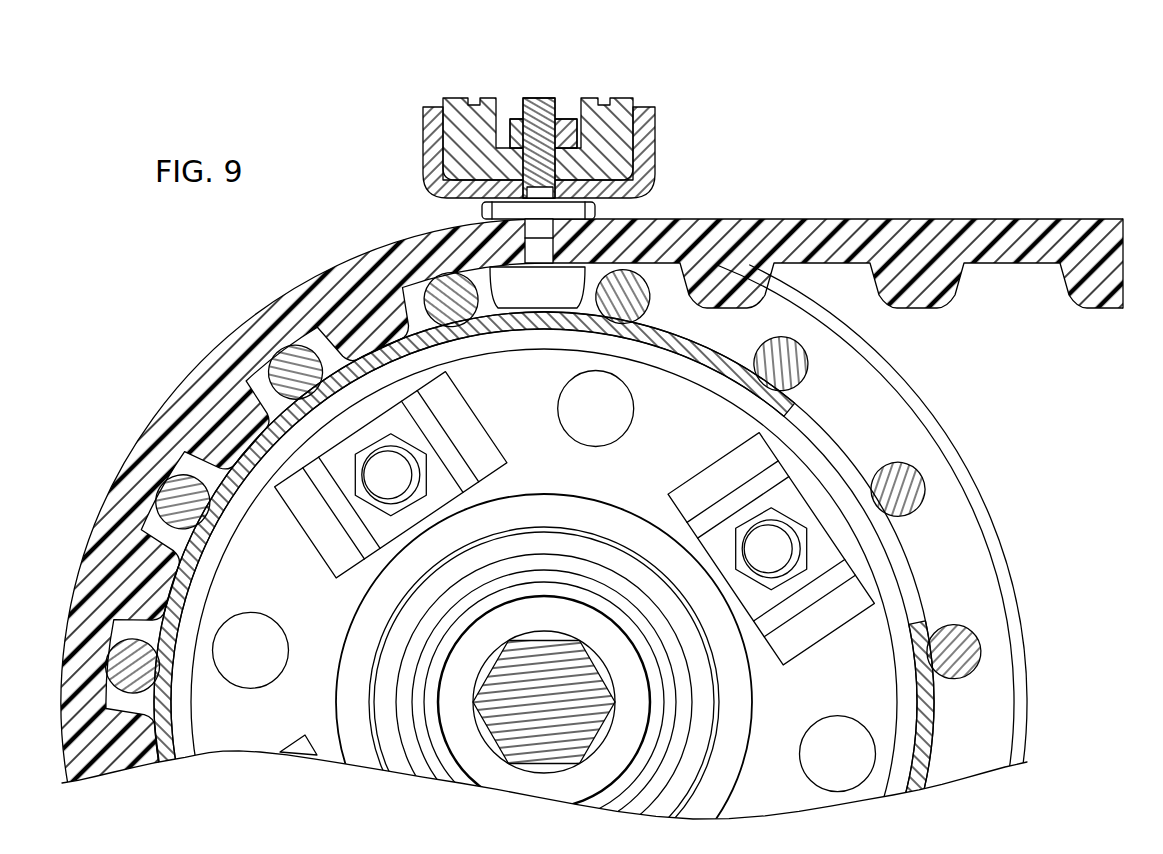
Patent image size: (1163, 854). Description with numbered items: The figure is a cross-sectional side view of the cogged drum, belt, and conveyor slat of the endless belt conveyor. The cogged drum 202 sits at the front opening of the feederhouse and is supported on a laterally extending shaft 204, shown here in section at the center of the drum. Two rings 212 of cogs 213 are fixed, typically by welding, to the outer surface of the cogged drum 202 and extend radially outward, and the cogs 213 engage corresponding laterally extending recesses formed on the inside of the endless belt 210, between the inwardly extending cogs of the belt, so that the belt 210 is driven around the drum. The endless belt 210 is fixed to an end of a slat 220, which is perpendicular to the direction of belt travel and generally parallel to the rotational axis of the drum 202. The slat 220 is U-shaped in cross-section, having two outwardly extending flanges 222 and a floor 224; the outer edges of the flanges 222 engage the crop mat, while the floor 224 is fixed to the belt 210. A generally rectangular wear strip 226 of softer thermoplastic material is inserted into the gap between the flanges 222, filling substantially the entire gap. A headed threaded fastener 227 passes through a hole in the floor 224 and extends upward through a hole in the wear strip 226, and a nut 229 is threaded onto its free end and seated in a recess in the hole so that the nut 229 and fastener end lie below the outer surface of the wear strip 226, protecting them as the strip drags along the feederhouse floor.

The cogged drum 202 is at (830, 420).
The shaft 204 is at (544, 690).
The endless belt 210 is at (945, 225).
The ring 212 is at (578, 482).
The cog 213 is at (905, 487).
The slat 220 is at (535, 175).
The flange 222 is at (430, 130).
The floor 224 is at (458, 122).
The wear strip 226 is at (608, 130).
The threaded fastener 227 is at (540, 125).
The nut 229 is at (520, 120).